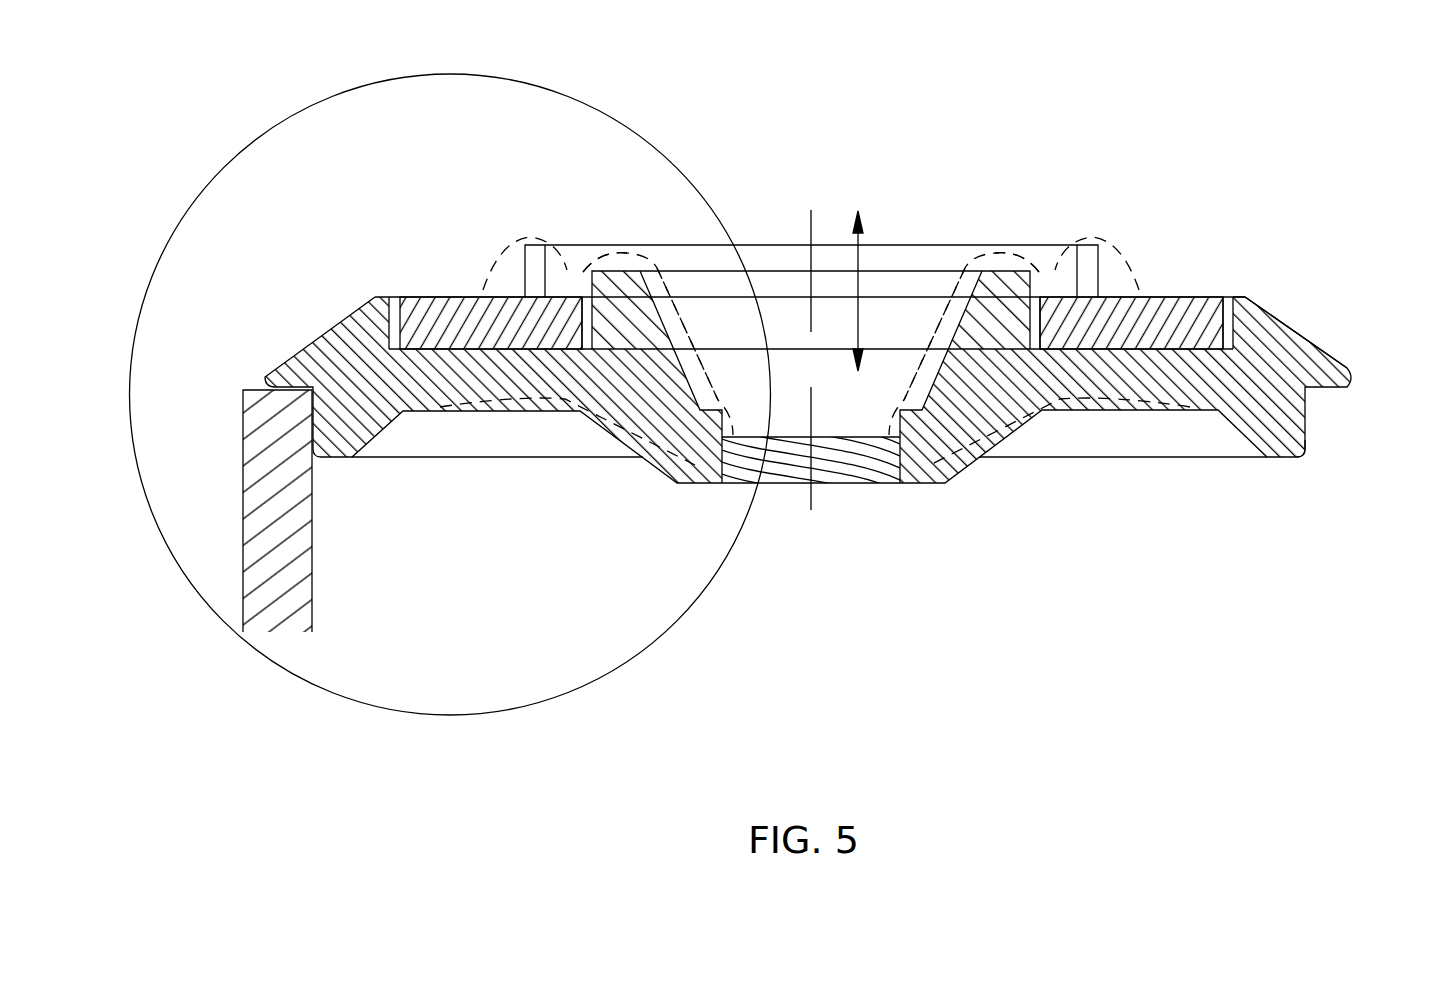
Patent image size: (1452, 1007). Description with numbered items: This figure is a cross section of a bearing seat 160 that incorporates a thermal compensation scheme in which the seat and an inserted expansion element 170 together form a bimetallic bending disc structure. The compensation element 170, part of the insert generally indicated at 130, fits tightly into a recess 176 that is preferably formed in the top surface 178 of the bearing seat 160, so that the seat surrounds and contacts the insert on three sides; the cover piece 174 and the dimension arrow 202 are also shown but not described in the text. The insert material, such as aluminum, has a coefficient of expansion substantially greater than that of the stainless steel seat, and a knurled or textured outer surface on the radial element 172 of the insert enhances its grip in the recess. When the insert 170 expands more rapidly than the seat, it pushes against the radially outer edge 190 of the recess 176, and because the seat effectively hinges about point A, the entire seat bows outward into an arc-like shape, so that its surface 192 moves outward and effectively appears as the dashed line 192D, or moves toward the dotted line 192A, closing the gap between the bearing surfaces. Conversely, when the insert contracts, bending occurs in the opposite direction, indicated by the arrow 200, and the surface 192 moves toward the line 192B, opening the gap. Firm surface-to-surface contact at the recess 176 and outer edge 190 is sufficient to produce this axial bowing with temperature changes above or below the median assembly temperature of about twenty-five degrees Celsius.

The insert 130 is at (1003, 290).
The bearing seat 160 is at (1287, 353).
The expansion element 170 is at (1127, 313).
The radial element 172 is at (422, 297).
The cover plate 174 is at (536, 246).
The recess 176 is at (1132, 348).
The top surface 178 is at (1243, 297).
The radially outer edge 190 is at (1230, 322).
The surface 192 is at (947, 300).
The dotted line 192A is at (935, 345).
The line 192B is at (1003, 290).
The dashed line 192D is at (687, 332).
The arrow 200 is at (847, 360).
The axial direction 202 is at (861, 272).
The point A is at (1305, 445).